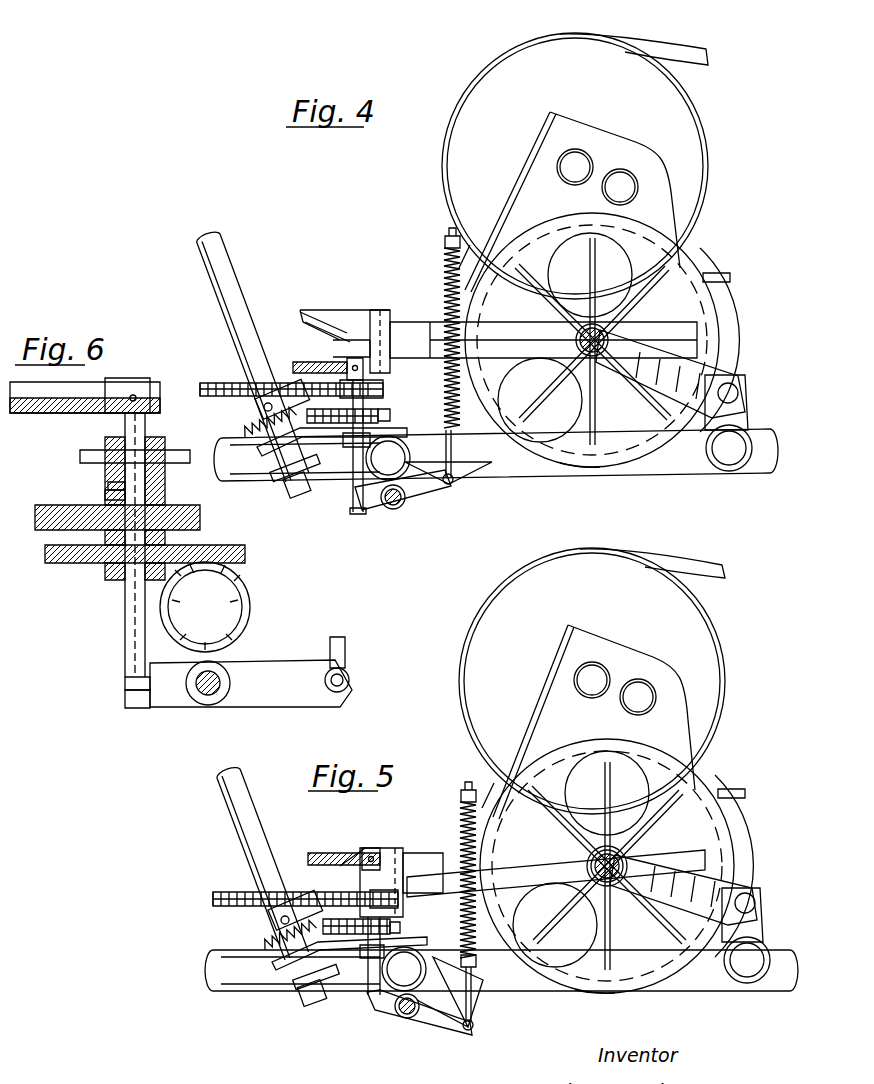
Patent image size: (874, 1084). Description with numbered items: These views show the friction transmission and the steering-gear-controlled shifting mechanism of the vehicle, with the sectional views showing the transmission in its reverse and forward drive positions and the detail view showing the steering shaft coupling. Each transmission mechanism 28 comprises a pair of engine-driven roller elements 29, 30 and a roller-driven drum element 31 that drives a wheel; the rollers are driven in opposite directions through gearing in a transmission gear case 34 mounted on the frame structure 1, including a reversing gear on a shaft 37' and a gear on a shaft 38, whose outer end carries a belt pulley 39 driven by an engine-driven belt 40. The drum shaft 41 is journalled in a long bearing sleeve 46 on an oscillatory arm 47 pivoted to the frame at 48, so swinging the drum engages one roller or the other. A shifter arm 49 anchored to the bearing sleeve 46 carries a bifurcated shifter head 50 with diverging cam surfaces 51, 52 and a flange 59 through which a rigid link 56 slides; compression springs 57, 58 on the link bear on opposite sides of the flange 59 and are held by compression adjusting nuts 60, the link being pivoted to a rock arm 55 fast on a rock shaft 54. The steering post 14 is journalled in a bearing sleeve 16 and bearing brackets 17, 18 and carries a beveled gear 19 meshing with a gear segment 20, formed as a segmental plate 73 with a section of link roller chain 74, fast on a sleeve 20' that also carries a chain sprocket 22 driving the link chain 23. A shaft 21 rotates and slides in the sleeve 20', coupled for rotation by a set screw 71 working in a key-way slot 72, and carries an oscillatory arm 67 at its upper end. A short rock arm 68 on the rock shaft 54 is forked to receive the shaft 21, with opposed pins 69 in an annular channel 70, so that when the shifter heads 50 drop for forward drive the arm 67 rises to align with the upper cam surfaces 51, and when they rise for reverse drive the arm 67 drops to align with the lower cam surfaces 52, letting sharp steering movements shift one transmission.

In FIG. 4, the frame structure 1 is at (658, 471).
In FIG. 6, the frame structure 1 is at (260, 596).
In FIG. 5, the frame structure 1 is at (240, 975).
In FIG. 4, the steering post 14 is at (220, 258).
In FIG. 5, the steering post 14 is at (245, 827).
In FIG. 4, the bearing sleeve 16 is at (280, 478).
In FIG. 5, the bearing sleeve 16 is at (300, 975).
In FIG. 4, the bearing bracket 17 is at (270, 444).
In FIG. 5, the bearing bracket 17 is at (214, 953).
In FIG. 4, the bearing bracket 18 is at (296, 494).
In FIG. 5, the bearing bracket 18 is at (308, 1003).
In FIG. 4, the beveled gear 19 is at (246, 432).
In FIG. 5, the beveled gear 19 is at (265, 945).
In FIG. 4, the gear segment 20 is at (358, 405).
In FIG. 6, the gear segment 20 is at (133, 525).
In FIG. 5, the gear segment 20 is at (383, 915).
In FIG. 6, the sleeve 20' is at (145, 577).
In FIG. 4, the shaft 21 is at (352, 490).
In FIG. 6, the shaft 21 is at (135, 607).
In FIG. 5, the shaft 21 is at (370, 973).
In FIG. 4, the chain sprocket 22 is at (378, 394).
In FIG. 6, the chain sprocket 22 is at (82, 456).
In FIG. 5, the chain sprocket 22 is at (395, 895).
In FIG. 4, the link chain 23 is at (230, 383).
In FIG. 5, the link chain 23 is at (222, 892).
In FIG. 4, the transmission mechanism 28 is at (685, 262).
In FIG. 5, the transmission mechanism 28 is at (700, 830).
In FIG. 4, the roller element 29 is at (690, 217).
In FIG. 5, the roller element 29 is at (695, 775).
In FIG. 4, the roller element 30 is at (568, 478).
In FIG. 5, the roller element 30 is at (550, 993).
In FIG. 4, the drum element 31 is at (716, 330).
In FIG. 5, the drum element 31 is at (732, 862).
In FIG. 4, the transmission gear case 34 is at (648, 167).
In FIG. 5, the transmission gear case 34 is at (672, 733).
In FIG. 4, the shaft 37' is at (635, 156).
In FIG. 5, the shaft 37' is at (653, 667).
In FIG. 4, the shaft 38 is at (575, 162).
In FIG. 5, the shaft 38 is at (588, 676).
In FIG. 4, the belt pulley 39 is at (525, 107).
In FIG. 5, the belt pulley 39 is at (556, 609).
In FIG. 4, the engine-driven belt 40 is at (680, 52).
In FIG. 5, the engine-driven belt 40 is at (725, 572).
In FIG. 5, the drum shaft 41 is at (602, 882).
In FIG. 4, the bearing sleeve 46 is at (608, 348).
In FIG. 5, the bearing sleeve 46 is at (622, 870).
In FIG. 4, the oscillatory arm 47 is at (680, 370).
In FIG. 5, the oscillatory arm 47 is at (706, 886).
In FIG. 4, the pivot 48 is at (736, 390).
In FIG. 5, the pivot 48 is at (754, 900).
In FIG. 4, the shifter arm 49 is at (400, 322).
In FIG. 5, the shifter arm 49 is at (420, 877).
In FIG. 4, the shifter head 50 is at (340, 310).
In FIG. 5, the shifter head 50 is at (386, 848).
In FIG. 4, the cam surface 51 is at (336, 326).
In FIG. 5, the cam surface 51 is at (342, 868).
In FIG. 4, the cam surface 52 is at (338, 345).
In FIG. 5, the cam surface 52 is at (323, 893).
In FIG. 4, the rock shaft 54 is at (398, 505).
In FIG. 5, the rock shaft 54 is at (408, 1018).
In FIG. 4, the rock arm 55 is at (425, 492).
In FIG. 5, the rock arm 55 is at (455, 1030).
In FIG. 4, the rigid link 56 is at (426, 460).
In FIG. 5, the rigid link 56 is at (475, 1026).
In FIG. 4, the compression spring 57 is at (455, 270).
In FIG. 5, the compression spring 57 is at (480, 810).
In FIG. 4, the compression spring 58 is at (463, 382).
In FIG. 5, the compression spring 58 is at (515, 972).
In FIG. 4, the flange 59 is at (523, 340).
In FIG. 5, the flange 59 is at (562, 838).
In FIG. 4, the compression adjusting nut 60 is at (450, 248).
In FIG. 5, the compression adjusting nut 60 is at (480, 800).
In FIG. 4, the oscillatory arm 67 is at (300, 366).
In FIG. 6, the oscillatory arm 67 is at (50, 413).
In FIG. 5, the oscillatory arm 67 is at (312, 853).
In FIG. 4, the short rock arm 68 is at (370, 515).
In FIG. 6, the short rock arm 68 is at (175, 710).
In FIG. 5, the short rock arm 68 is at (385, 1012).
In FIG. 6, the pin 69 is at (128, 685).
In FIG. 6, the annular channel 70 is at (145, 712).
In FIG. 6, the set screw 71 is at (108, 484).
In FIG. 6, the key-way slot 72 is at (105, 494).
In FIG. 4, the segmental plate 73 is at (388, 423).
In FIG. 5, the segmental plate 73 is at (400, 930).
In FIG. 4, the link roller chain 74 is at (258, 402).
In FIG. 5, the link roller chain 74 is at (275, 912).